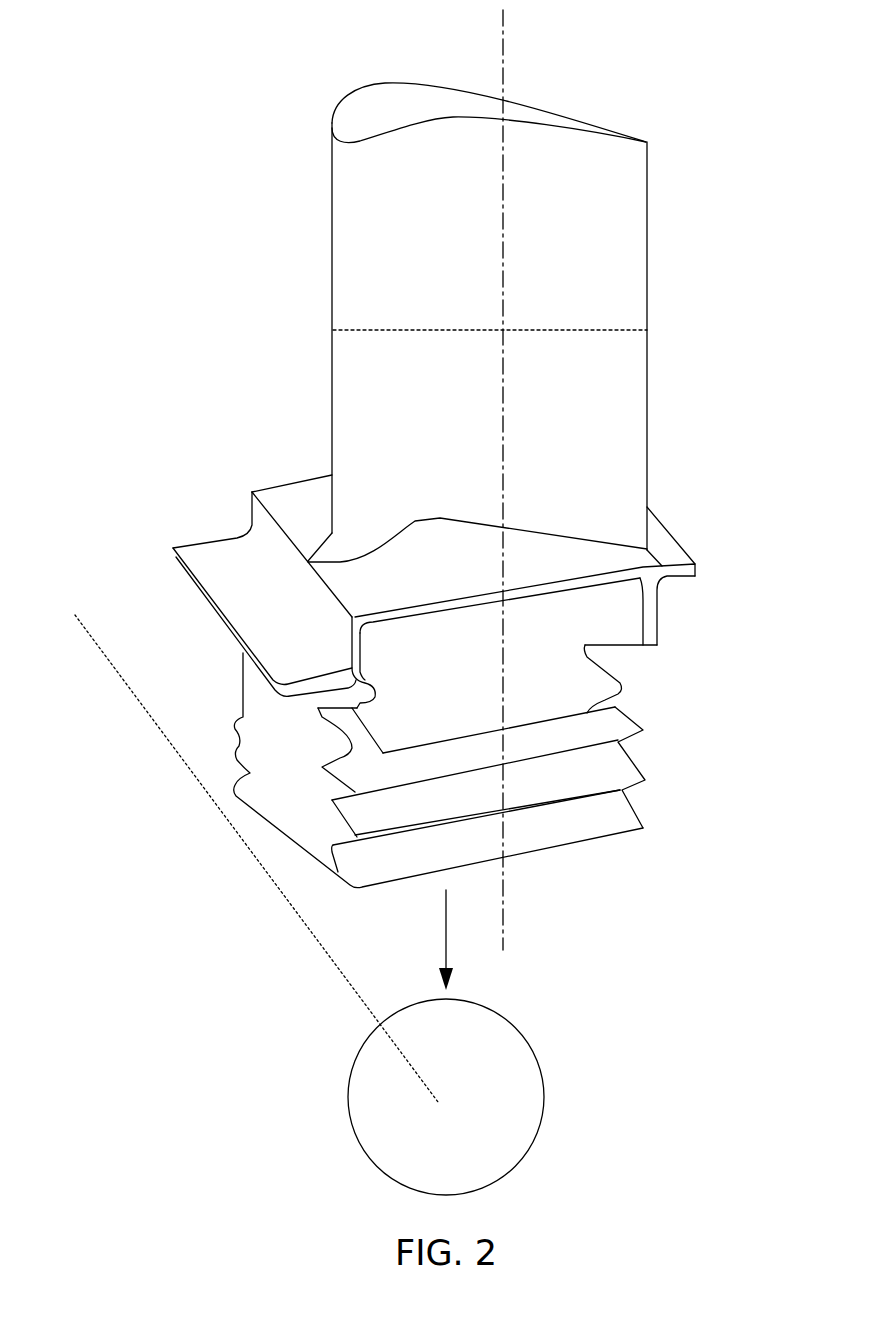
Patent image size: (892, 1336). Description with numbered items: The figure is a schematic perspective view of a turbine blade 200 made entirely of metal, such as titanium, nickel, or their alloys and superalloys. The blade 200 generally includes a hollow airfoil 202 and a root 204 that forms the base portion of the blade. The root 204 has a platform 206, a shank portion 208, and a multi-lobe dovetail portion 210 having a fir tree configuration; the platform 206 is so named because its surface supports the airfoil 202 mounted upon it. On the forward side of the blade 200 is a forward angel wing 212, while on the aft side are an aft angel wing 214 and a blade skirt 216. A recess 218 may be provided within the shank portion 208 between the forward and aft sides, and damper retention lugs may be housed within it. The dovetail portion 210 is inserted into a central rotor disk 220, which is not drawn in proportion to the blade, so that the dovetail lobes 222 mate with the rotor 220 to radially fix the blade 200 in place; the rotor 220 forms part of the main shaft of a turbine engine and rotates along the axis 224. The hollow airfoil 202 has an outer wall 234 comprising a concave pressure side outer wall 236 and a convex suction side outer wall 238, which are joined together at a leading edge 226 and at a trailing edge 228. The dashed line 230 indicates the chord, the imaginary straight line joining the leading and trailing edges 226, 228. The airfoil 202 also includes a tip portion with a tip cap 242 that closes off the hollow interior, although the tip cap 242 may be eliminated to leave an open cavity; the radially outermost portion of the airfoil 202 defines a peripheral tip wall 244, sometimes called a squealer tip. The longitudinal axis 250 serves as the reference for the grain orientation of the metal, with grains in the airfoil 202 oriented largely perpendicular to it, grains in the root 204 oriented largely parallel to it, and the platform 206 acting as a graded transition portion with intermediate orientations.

The blade 200 is at (292, 103).
The hollow airfoil 202 is at (637, 253).
The root 204 is at (253, 698).
The platform 206 is at (290, 488).
The shank portion 208 is at (715, 660).
The multi-lobe dovetail portion 210 is at (700, 822).
The forward angel wing 212 is at (220, 550).
The aft angel wing 214 is at (673, 552).
The blade skirt 216 is at (655, 627).
The recess 218 is at (522, 645).
The central rotor disk 220 is at (543, 1067).
The dovetail lobes 222 is at (620, 727).
The axis 224 is at (253, 857).
The leading edge 226 is at (317, 376).
The trailing edge 228 is at (665, 300).
The chord 230 is at (453, 328).
The outer wall 234 is at (633, 458).
The concave pressure side outer wall 236 is at (626, 365).
The convex suction side outer wall 238 is at (344, 284).
The tip cap 242 is at (481, 98).
The peripheral tip wall 244 is at (349, 163).
The longitudinal axis 250 is at (507, 45).